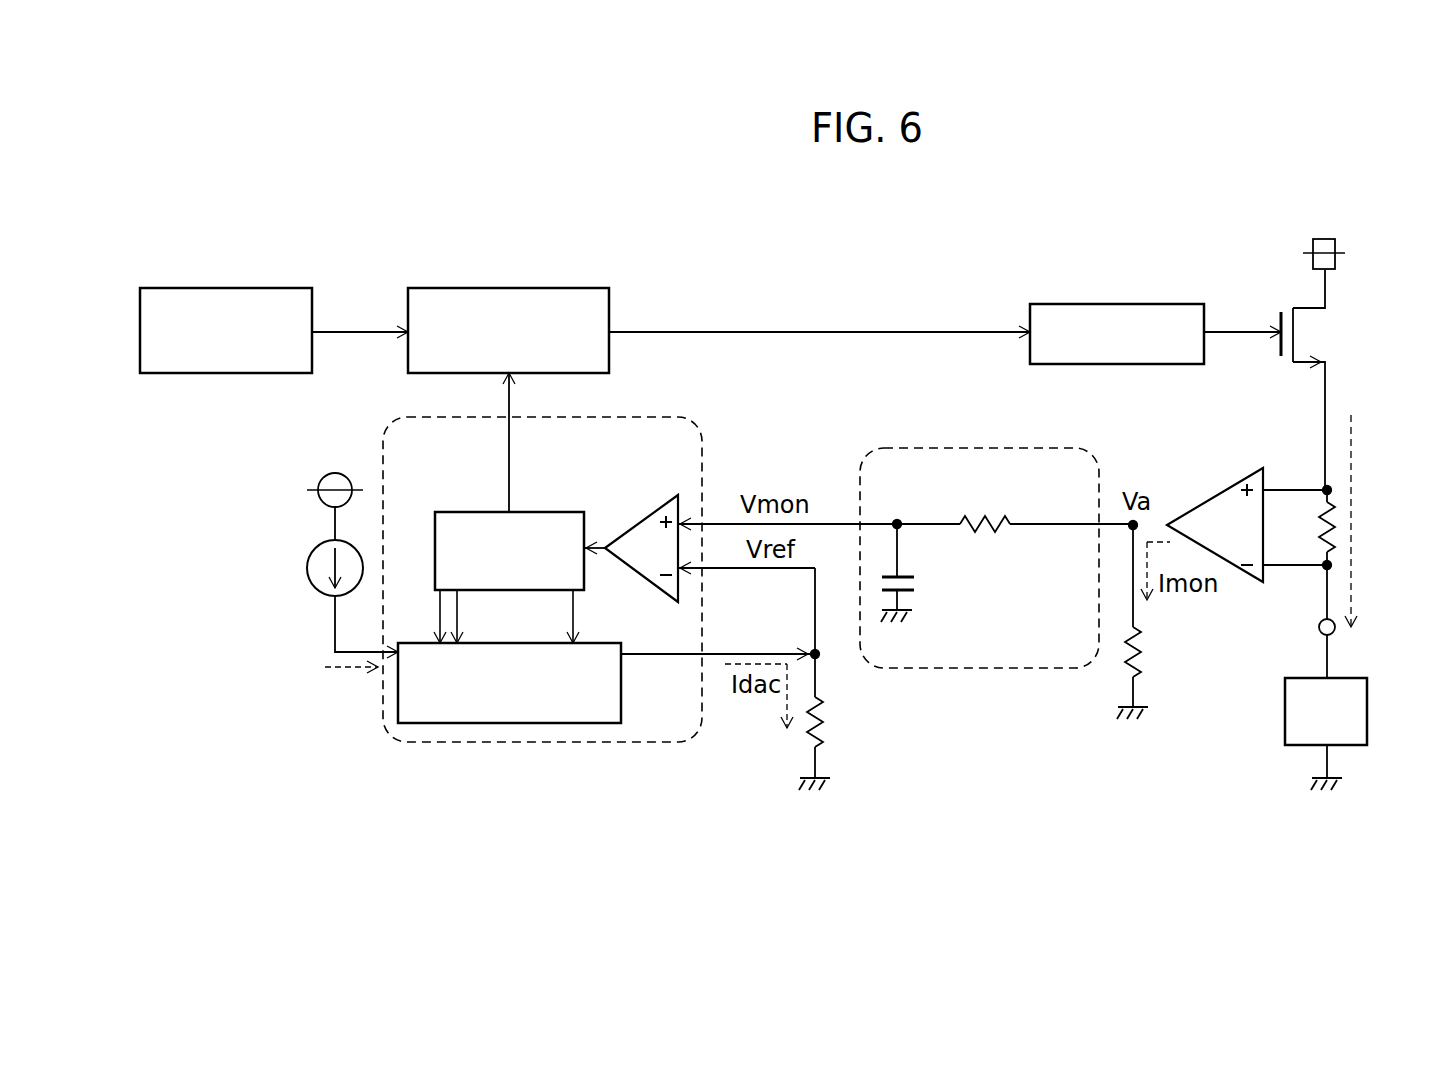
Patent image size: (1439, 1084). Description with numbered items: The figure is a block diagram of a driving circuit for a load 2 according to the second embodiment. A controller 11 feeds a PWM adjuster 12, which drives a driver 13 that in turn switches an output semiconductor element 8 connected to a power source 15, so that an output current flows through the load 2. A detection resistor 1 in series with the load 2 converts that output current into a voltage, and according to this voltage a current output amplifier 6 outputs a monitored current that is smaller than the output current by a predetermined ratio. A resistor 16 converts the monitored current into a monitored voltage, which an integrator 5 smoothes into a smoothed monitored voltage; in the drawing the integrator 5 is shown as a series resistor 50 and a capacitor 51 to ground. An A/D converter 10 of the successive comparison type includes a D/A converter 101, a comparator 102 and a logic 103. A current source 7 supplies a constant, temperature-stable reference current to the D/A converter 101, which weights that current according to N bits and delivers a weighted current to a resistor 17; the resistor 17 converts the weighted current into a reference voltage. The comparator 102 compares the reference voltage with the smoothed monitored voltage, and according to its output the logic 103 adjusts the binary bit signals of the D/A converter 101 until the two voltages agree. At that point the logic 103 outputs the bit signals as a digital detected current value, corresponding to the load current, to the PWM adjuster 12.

The detection resistor 1 is at (1340, 527).
The load 2 is at (1367, 712).
The integrator 5 is at (996, 520).
The current output amplifier 6 is at (1205, 497).
The current source 7 is at (307, 565).
The output semiconductor element 8 is at (1312, 337).
The A/D converter 10 is at (542, 576).
The controller 11 is at (243, 288).
The PWM adjuster 12 is at (497, 288).
The driver 13 is at (1118, 304).
The power source 15 is at (1337, 250).
The resistor 16 is at (1143, 640).
The resistor 17 is at (829, 722).
The filter resistor 50 is at (985, 532).
The filter capacitor 51 is at (918, 583).
The D/A converter 101 is at (528, 723).
The comparator 102 is at (636, 520).
The logic 103 is at (465, 512).